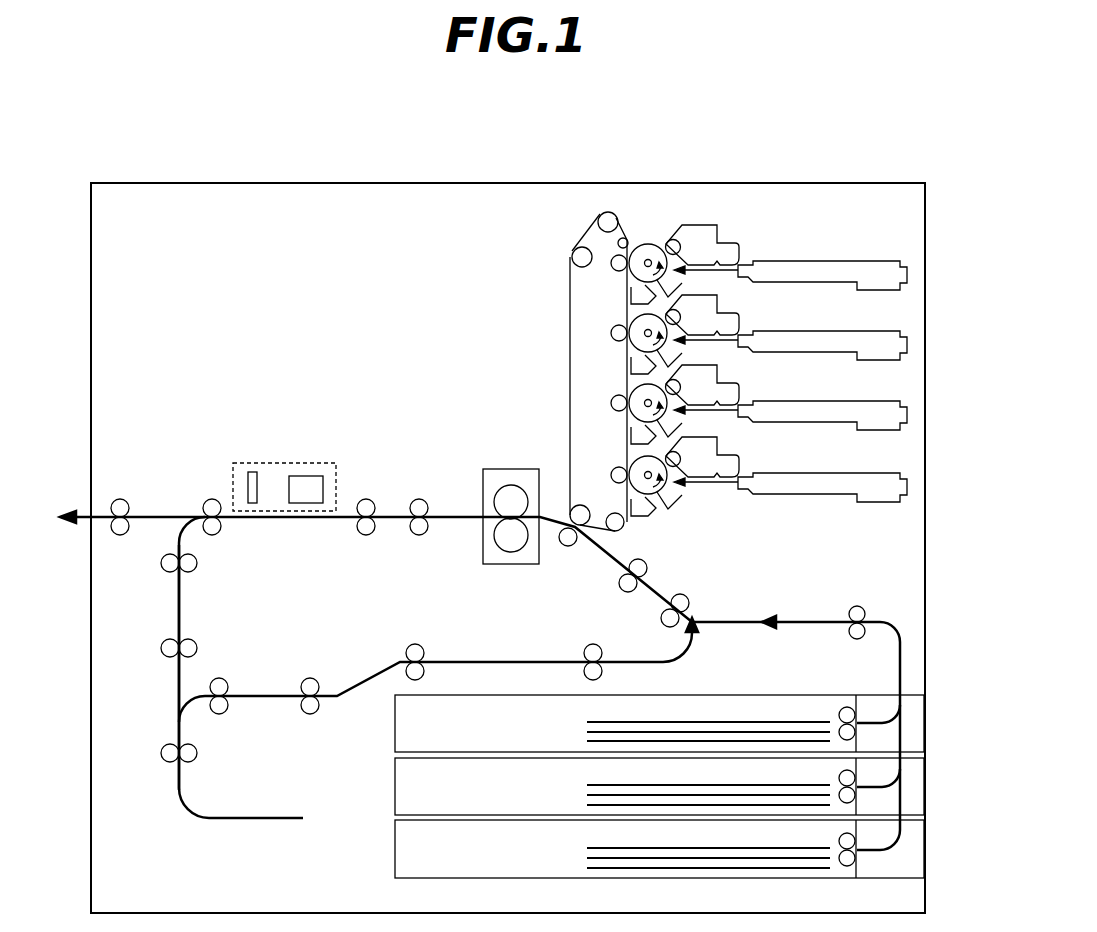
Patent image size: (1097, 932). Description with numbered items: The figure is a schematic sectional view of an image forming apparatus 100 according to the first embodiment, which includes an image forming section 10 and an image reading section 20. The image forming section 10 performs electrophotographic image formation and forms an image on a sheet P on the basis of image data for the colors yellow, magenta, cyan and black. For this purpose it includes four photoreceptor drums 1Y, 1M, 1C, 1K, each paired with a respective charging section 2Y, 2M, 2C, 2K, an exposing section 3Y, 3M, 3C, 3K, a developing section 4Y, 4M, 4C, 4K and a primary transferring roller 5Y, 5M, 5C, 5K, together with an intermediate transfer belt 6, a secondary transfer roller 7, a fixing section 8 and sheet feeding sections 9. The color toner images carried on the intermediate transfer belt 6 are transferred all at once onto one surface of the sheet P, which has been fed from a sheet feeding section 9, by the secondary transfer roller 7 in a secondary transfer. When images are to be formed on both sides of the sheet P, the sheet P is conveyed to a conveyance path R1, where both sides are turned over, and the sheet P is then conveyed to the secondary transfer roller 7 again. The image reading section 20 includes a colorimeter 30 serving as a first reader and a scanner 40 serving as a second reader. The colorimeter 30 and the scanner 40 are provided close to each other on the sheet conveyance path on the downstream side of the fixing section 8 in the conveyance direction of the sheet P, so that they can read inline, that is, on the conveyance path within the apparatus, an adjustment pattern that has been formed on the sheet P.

The image forming apparatus 100 is at (423, 170).
The image forming section 10 is at (488, 337).
The intermediate transfer belt 6 is at (569, 292).
The photoreceptor drum 1Y is at (651, 246).
The photoreceptor drum 1M is at (638, 321).
The photoreceptor drum 1C is at (638, 391).
The photoreceptor drum 1K is at (638, 461).
The charging section 2Y is at (684, 280).
The charging section 2M is at (684, 350).
The charging section 2C is at (684, 420).
The charging section 2K is at (686, 492).
The exposing section 3Y is at (858, 261).
The exposing section 3M is at (857, 331).
The exposing section 3C is at (857, 401).
The exposing section 3K is at (857, 473).
The developing section 4Y is at (741, 253).
The developing section 4M is at (741, 326).
The developing section 4C is at (741, 396).
The developing section 4K is at (741, 468).
The primary transferring roller 5Y is at (611, 258).
The primary transferring roller 5M is at (611, 329).
The primary transferring roller 5C is at (611, 399).
The primary transferring roller 5K is at (612, 472).
The secondary transfer roller 7 is at (568, 546).
The fixing section 8 is at (481, 490).
The sheet feeding section 9 is at (920, 733).
The image reading section 20 is at (245, 463).
The colorimeter 30 is at (257, 472).
The scanner 40 is at (305, 476).
The conveyance path R1 is at (176, 600).
The sheet P is at (590, 722).